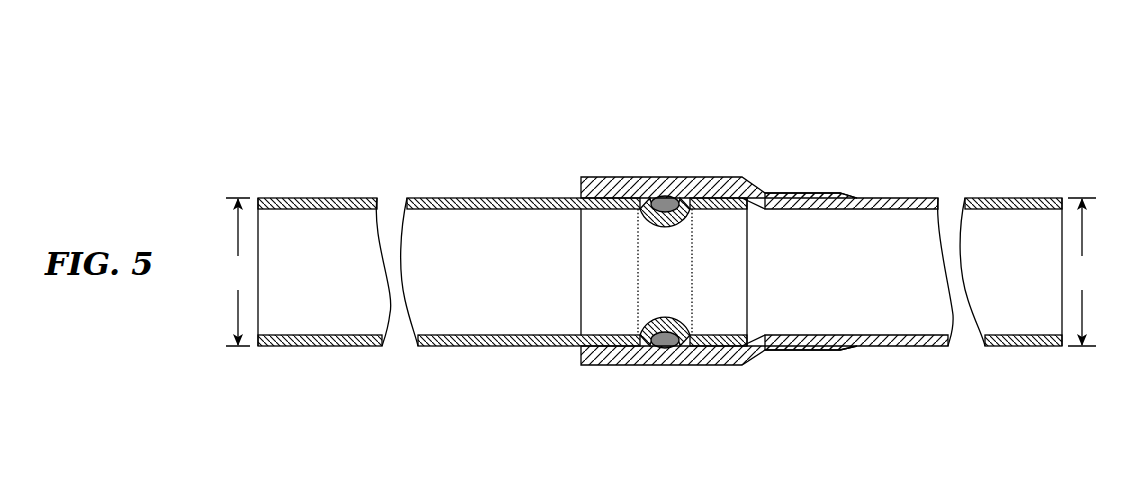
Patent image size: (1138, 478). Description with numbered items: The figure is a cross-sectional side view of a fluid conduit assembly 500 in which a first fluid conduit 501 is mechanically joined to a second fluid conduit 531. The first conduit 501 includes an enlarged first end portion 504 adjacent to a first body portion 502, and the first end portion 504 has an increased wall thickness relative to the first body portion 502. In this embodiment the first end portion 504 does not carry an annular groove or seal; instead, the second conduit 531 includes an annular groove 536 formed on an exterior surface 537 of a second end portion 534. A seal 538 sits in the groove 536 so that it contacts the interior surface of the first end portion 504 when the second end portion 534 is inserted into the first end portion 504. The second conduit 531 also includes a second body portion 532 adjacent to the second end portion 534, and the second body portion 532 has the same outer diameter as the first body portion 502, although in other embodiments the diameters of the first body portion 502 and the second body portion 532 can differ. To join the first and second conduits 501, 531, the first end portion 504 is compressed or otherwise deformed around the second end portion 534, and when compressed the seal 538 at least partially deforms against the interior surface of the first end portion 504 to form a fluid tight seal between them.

The fluid conduit assembly 500 is at (856, 126).
The first fluid conduit 501 is at (1015, 160).
The first body portion 502 is at (934, 368).
The first end portion 504 is at (728, 391).
The second fluid conduit 531 is at (337, 162).
The second body portion 532 is at (465, 361).
The second end portion 534 is at (725, 335).
The annular groove 536 is at (665, 334).
The exterior surface 537 is at (501, 198).
The seal 538 is at (663, 203).